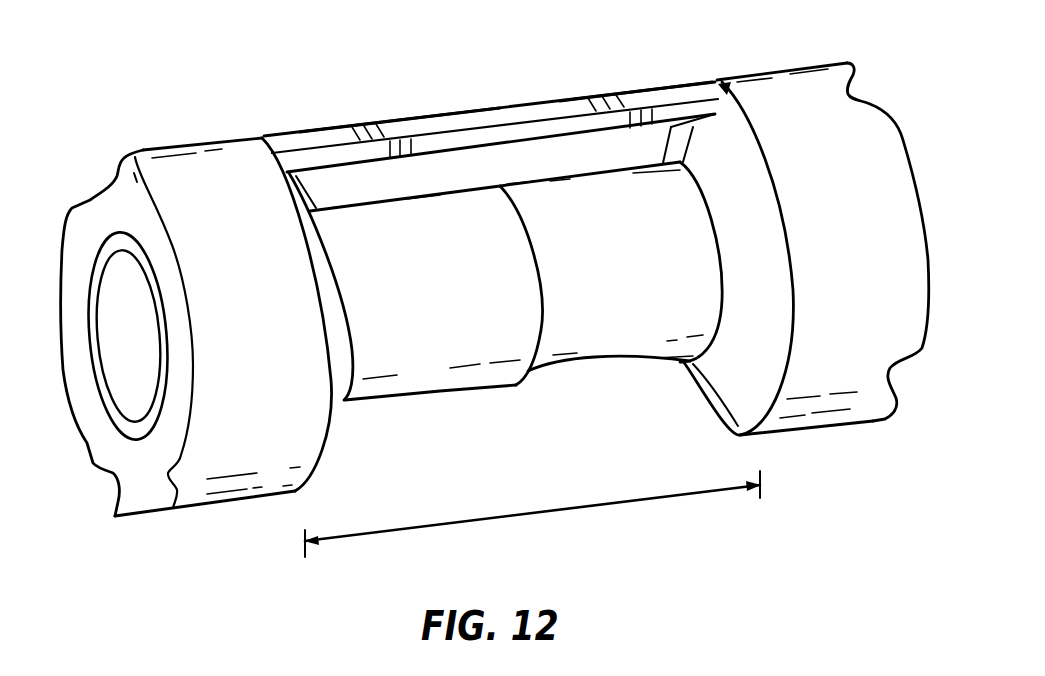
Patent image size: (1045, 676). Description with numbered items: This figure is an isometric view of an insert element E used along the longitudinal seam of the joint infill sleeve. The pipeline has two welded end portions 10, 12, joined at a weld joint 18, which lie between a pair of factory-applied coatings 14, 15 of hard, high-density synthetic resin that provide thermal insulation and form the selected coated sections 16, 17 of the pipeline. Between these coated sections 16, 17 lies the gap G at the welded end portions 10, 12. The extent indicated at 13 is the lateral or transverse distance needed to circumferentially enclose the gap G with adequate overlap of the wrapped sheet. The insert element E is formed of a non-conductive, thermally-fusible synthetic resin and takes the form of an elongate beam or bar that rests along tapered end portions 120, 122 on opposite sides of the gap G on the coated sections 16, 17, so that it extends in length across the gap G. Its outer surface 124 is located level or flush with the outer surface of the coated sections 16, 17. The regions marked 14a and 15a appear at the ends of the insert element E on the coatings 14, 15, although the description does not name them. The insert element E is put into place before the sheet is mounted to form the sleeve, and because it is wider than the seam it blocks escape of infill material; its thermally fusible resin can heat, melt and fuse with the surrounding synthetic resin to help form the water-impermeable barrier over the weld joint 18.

The welded end portion 10 is at (428, 396).
The welded end portion 12 is at (632, 370).
The lateral extent 13 is at (510, 518).
The coating 14 is at (335, 405).
The first strip end 14a is at (311, 178).
The coating 15 is at (742, 387).
The second strip end 15a is at (704, 126).
The coated section 16 is at (142, 147).
The coated section 17 is at (809, 72).
The weld joint 18 is at (540, 358).
The tapered end portion 120 is at (267, 140).
The tapered end portion 122 is at (693, 80).
The outer surface 124 is at (480, 112).
The insert element E is at (565, 100).
The gap G is at (511, 418).